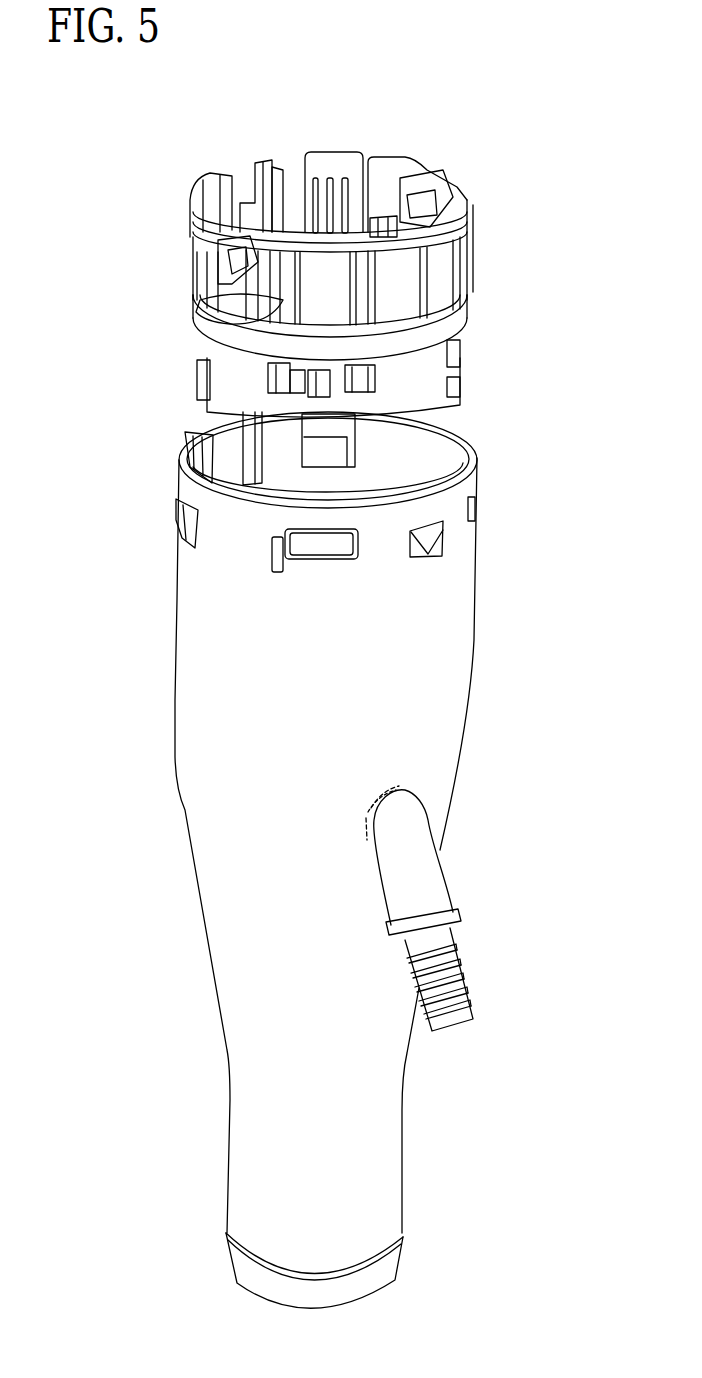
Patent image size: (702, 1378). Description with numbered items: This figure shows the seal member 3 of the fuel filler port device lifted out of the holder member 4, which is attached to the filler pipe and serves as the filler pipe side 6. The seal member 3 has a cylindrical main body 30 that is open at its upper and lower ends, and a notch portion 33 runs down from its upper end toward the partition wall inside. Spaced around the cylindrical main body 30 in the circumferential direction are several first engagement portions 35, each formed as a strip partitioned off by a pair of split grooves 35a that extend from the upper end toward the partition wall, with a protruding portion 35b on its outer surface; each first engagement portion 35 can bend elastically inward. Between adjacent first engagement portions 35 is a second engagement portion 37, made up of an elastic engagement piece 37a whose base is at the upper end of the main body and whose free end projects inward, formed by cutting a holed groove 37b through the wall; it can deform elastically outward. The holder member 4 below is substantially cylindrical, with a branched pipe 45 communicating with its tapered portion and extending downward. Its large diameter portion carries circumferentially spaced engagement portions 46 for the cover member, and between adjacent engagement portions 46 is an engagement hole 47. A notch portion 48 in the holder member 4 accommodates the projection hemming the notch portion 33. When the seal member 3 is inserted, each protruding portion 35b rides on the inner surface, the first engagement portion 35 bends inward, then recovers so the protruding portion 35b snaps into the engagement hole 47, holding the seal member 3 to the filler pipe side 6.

The seal member 3 is at (323, 278).
The cylindrical main body 30 is at (323, 278).
The notch portion 33 is at (238, 182).
The first engagement portion 35 is at (308, 248).
The split groove 35a is at (307, 172).
The protruding portion 35b is at (308, 248).
The second engagement portion 37 is at (322, 240).
The elastic engagement piece 37a is at (322, 240).
The holed groove 37b is at (437, 193).
The holder member 4 is at (320, 860).
The filler pipe side 6 is at (320, 860).
The branched pipe 45 is at (473, 990).
The engagement portion 46 is at (172, 510).
The engagement hole 47 is at (347, 563).
The notch portion 48 is at (232, 442).